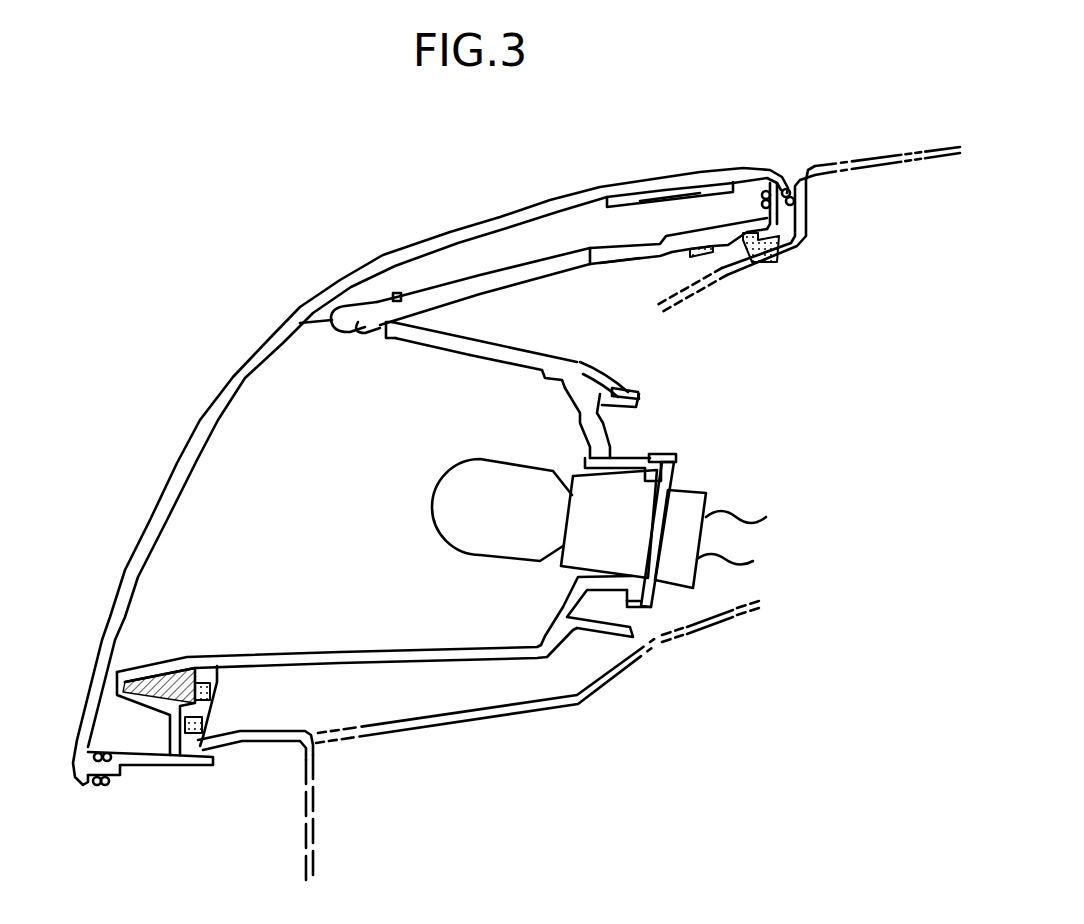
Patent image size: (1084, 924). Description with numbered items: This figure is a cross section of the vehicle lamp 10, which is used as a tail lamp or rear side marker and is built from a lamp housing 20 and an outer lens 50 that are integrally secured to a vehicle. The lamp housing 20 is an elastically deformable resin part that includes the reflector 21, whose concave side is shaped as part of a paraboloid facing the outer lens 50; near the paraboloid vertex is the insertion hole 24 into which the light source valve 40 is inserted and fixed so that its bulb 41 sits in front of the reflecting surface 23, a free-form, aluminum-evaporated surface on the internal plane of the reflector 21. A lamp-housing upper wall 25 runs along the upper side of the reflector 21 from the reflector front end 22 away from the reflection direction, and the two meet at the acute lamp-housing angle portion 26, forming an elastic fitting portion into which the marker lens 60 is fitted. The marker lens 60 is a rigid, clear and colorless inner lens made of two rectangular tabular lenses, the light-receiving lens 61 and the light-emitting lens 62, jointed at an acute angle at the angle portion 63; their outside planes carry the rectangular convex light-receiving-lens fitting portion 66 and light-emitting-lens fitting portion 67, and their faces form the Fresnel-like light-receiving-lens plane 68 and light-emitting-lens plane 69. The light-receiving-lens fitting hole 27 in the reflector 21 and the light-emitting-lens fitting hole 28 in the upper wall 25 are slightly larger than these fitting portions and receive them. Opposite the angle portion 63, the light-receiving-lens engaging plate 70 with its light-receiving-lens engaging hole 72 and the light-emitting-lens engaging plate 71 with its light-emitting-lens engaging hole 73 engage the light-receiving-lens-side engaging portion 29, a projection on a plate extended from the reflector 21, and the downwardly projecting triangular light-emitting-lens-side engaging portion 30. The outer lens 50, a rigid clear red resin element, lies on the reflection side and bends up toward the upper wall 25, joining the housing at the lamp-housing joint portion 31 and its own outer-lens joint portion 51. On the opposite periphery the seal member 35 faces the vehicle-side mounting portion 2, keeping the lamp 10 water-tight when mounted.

The vehicle-side mounting portion 2 is at (862, 153).
The vehicle lamp 10 is at (337, 205).
The lamp housing 20 is at (380, 668).
The reflector 21 is at (610, 441).
The reflector front end 22 is at (328, 332).
The reflecting surface 23 is at (562, 398).
The insertion hole 24 is at (592, 570).
The lamp-housing upper wall 25 is at (636, 245).
The lamp-housing angle portion 26 is at (343, 316).
The light-receiving-lens fitting hole 27 is at (392, 342).
The light-emitting-lens fitting hole 28 is at (397, 296).
The light-receiving-lens-side engaging portion 29 is at (641, 406).
The light-emitting-lens-side engaging portion 30 is at (682, 257).
The lamp-housing joint portion 31 is at (797, 203).
The seal member 35 is at (195, 722).
The light source valve 40 is at (693, 488).
The bulb 41 is at (434, 506).
The outer lens 50 is at (233, 378).
The outer-lens joint portion 51 is at (97, 782).
The marker lens 60 is at (526, 260).
The light-receiving lens 61 is at (495, 366).
The light-emitting lens 62 is at (465, 285).
The angle portion 63 is at (352, 336).
The light-receiving-lens fitting portion 66 is at (440, 366).
The light-emitting-lens fitting portion 67 is at (576, 255).
The light-receiving-lens plane 68 is at (455, 329).
The light-emitting-lens plane 69 is at (520, 284).
The light-receiving-lens engaging plate 70 is at (596, 363).
The light-emitting-lens engaging plate 71 is at (624, 265).
The light-receiving-lens engaging hole 72 is at (630, 390).
The light-emitting-lens engaging hole 73 is at (700, 256).